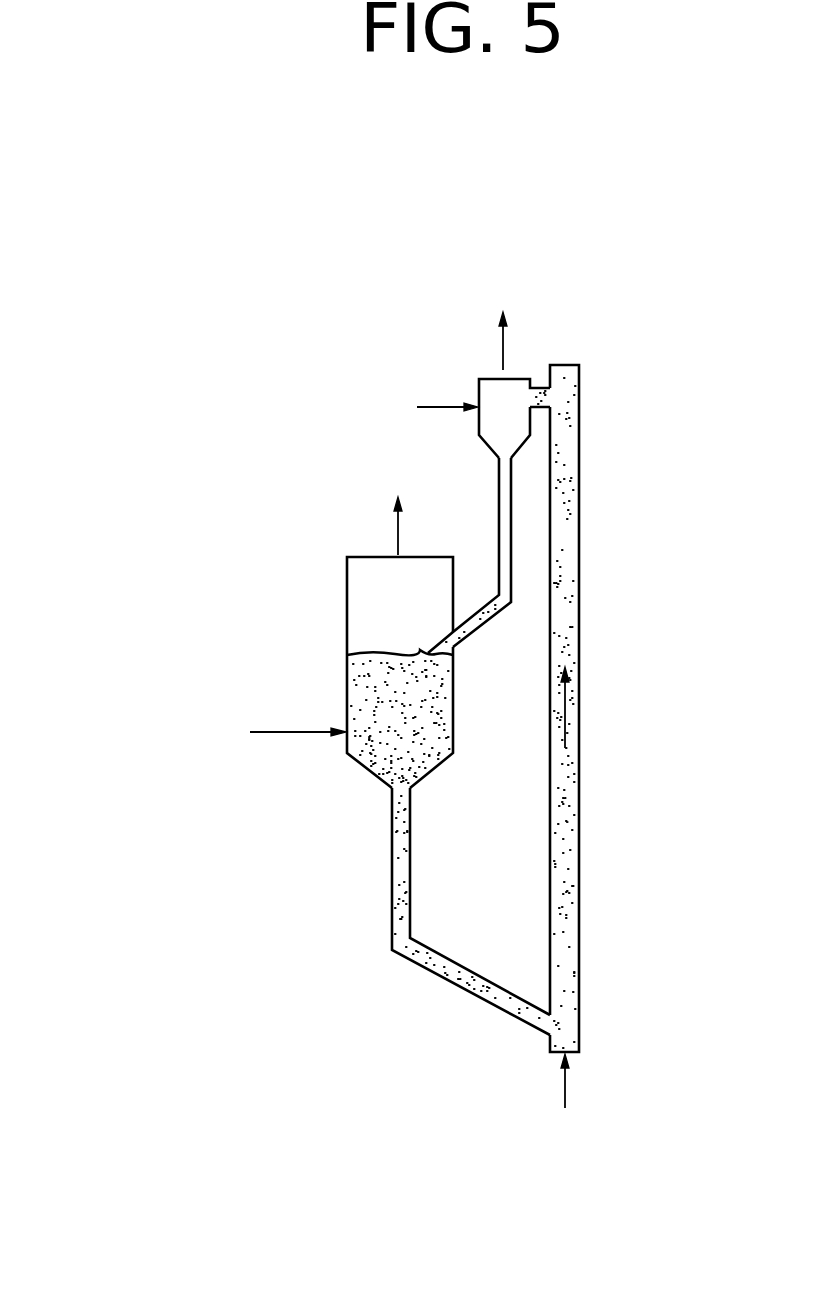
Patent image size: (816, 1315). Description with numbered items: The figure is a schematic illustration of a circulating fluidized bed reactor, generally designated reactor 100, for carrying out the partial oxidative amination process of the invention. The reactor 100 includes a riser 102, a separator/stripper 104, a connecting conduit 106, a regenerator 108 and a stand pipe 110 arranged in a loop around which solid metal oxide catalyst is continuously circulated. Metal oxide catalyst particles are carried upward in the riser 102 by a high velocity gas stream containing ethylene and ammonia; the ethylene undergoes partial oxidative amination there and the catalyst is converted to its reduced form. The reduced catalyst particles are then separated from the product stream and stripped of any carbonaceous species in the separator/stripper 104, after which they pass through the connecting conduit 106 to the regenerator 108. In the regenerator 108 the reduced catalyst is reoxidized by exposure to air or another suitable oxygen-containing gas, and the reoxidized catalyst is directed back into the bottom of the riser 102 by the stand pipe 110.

The reactor 100 is at (270, 313).
The riser 102 is at (580, 687).
The separator/stripper 104 is at (478, 383).
The connecting conduit 106 is at (498, 490).
The regenerator 108 is at (347, 655).
The stand pipe 110 is at (392, 887).